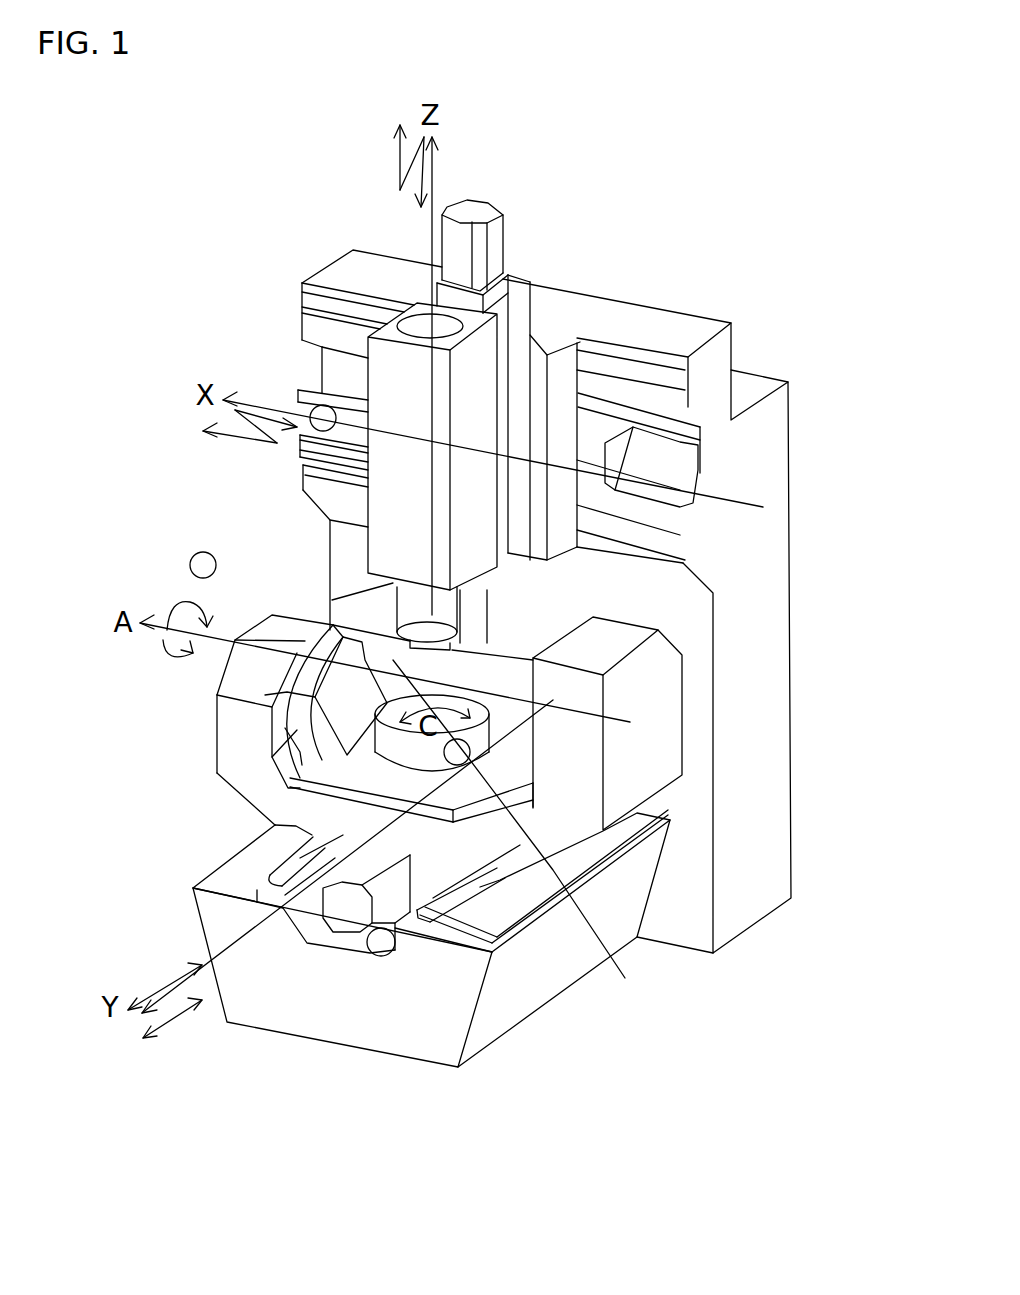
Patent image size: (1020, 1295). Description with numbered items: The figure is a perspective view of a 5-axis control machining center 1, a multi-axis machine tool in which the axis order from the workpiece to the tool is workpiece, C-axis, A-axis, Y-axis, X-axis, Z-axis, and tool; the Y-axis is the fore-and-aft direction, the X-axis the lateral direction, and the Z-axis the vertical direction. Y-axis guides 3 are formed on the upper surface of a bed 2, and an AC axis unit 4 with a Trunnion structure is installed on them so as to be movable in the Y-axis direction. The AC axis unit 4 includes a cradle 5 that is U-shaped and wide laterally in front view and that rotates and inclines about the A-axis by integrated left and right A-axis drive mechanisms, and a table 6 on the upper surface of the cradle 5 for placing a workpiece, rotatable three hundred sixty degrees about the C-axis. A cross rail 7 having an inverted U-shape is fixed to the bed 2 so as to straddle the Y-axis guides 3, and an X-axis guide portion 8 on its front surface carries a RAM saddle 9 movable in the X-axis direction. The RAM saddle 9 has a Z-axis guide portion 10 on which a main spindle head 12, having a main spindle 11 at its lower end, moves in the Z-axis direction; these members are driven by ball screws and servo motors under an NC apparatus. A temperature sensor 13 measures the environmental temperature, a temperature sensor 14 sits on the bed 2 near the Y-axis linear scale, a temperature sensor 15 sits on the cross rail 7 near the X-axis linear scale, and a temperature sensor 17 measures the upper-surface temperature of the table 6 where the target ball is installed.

The 5-axis control machining center 1 is at (690, 258).
The bed 2 is at (572, 960).
The Y-axis guides 3 is at (285, 877).
The AC axis unit 4 is at (267, 610).
The cradle 5 is at (510, 767).
The table 6 is at (413, 800).
The cross rail 7 is at (767, 568).
The X-axis guide portion 8 is at (680, 380).
The RAM saddle 9 is at (545, 368).
The Z-axis guide portion 10 is at (538, 377).
The main spindle 11 is at (413, 610).
The main spindle head 12 is at (393, 397).
The temperature sensor 13 is at (197, 563).
The temperature sensor 14 is at (381, 945).
The temperature sensor 15 is at (313, 425).
The temperature sensor 17 is at (612, 962).